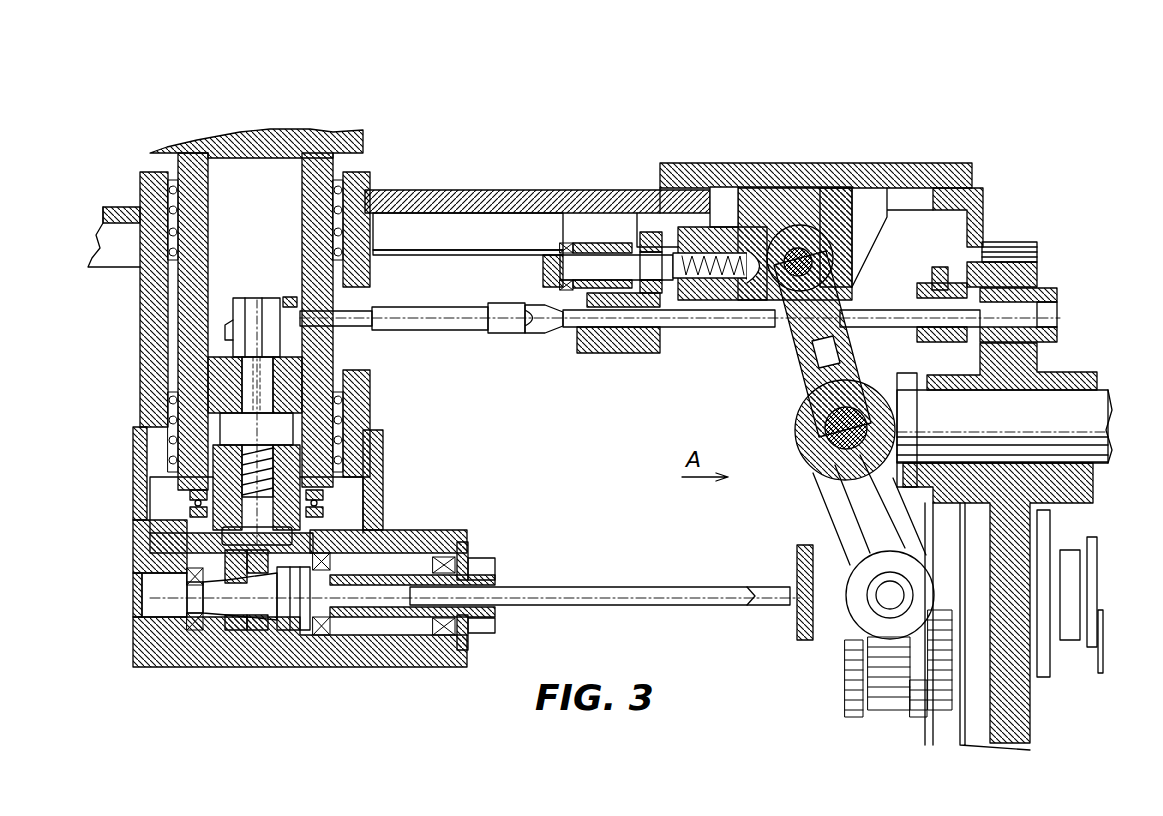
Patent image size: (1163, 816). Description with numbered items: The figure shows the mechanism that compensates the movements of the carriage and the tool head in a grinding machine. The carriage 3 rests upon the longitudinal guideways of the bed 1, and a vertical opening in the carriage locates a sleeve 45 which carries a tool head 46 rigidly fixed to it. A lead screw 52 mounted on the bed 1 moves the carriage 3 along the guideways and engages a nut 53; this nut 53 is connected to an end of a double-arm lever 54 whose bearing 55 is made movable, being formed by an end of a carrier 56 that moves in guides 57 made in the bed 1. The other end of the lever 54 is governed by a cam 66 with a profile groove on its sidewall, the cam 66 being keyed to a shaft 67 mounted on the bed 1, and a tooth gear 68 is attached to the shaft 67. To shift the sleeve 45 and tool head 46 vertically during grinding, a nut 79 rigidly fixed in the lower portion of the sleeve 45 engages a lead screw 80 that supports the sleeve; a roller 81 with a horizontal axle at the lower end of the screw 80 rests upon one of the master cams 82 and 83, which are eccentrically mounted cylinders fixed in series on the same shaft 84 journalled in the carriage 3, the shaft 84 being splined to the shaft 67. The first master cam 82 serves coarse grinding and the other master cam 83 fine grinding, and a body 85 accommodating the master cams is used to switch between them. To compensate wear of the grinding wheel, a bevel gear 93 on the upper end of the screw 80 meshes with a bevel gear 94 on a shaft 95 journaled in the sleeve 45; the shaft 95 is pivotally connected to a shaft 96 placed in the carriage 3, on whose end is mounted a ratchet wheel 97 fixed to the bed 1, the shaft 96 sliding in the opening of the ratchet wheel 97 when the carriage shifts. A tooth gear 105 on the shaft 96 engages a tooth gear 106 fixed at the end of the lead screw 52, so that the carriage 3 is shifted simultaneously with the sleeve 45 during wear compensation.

The bed 1 is at (1028, 273).
The carriage 3 is at (510, 197).
The sleeve 45 is at (318, 177).
The tool head 46 is at (205, 145).
The lead screw 52 is at (718, 282).
The nut 53 is at (818, 172).
The double-arm lever 54 is at (793, 350).
The bearing 55 is at (797, 421).
The carrier 56 is at (930, 407).
The guides 57 is at (1070, 383).
The cam 66 is at (823, 663).
The shaft 67 is at (608, 593).
The tooth gear 68 is at (942, 703).
The nut 79 is at (232, 466).
The lead screw 80 is at (200, 520).
The roller 81 is at (316, 515).
The master cam 82 is at (223, 565).
The master cam 83 is at (262, 630).
The shaft 84 is at (293, 630).
The body 85 is at (152, 645).
The bevel gear 93 is at (237, 333).
The bevel gear 94 is at (272, 313).
The shaft 95 is at (447, 315).
The shaft 96 is at (697, 316).
The ratchet wheel 97 is at (930, 280).
The tooth gear 105 is at (642, 345).
The tooth gear 106 is at (648, 240).